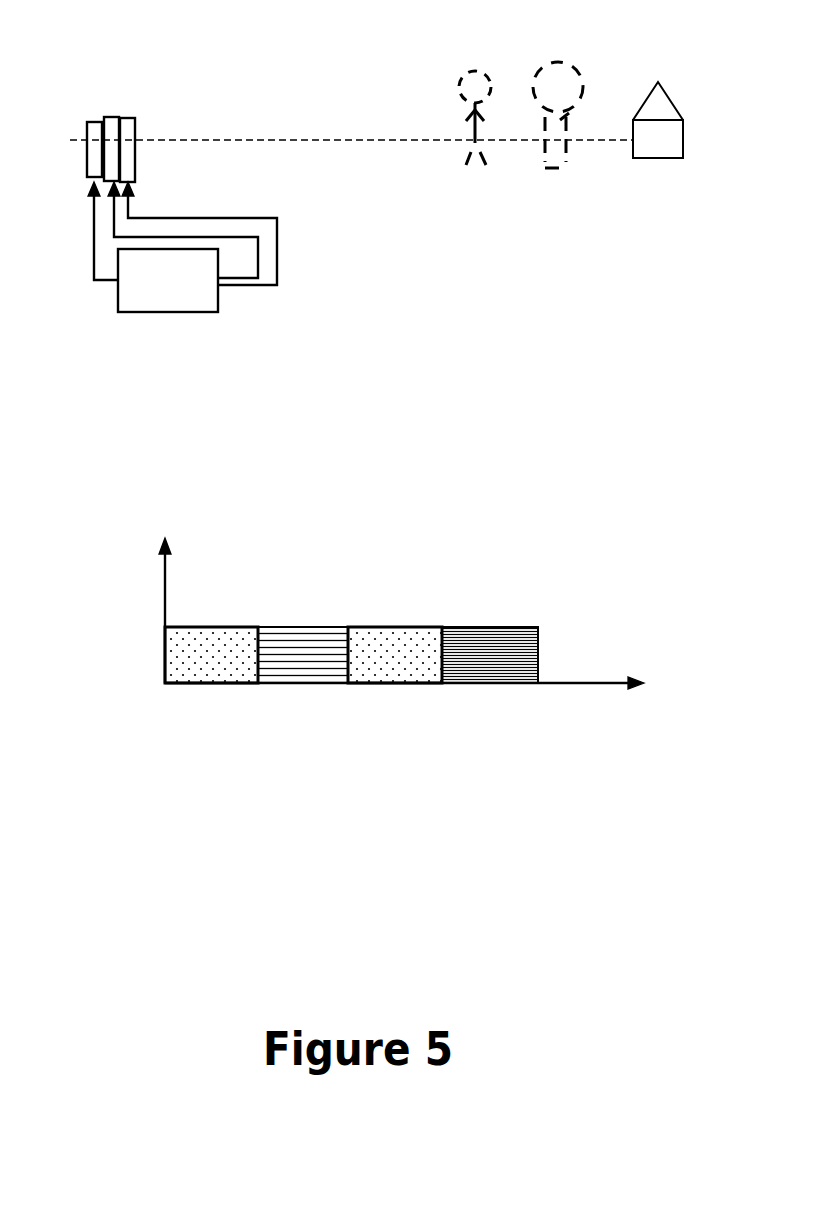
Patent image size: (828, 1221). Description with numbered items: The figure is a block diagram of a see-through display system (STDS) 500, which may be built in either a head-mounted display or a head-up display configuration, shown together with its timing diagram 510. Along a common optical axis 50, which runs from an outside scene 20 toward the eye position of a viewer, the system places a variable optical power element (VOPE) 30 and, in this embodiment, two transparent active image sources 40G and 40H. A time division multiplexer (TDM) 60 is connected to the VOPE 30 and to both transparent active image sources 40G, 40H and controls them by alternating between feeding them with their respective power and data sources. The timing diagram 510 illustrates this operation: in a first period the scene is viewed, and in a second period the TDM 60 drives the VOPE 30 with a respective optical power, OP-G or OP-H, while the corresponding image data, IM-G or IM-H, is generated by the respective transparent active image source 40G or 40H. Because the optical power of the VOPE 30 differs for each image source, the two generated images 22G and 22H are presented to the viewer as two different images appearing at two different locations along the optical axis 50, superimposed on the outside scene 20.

The outside scene 20 is at (638, 108).
The image G 22G is at (472, 107).
The image H 22H is at (530, 80).
The variable optical power element (VOPE) 30 is at (90, 122).
The transparent active image source G 40G is at (107, 117).
The transparent active image source H 40H is at (135, 132).
The optical axis 50 is at (360, 140).
The time division multiplexer (TDM) 60 is at (167, 313).
The see-through display system (STDS) 500 is at (455, 249).
The timing diagram 510 is at (344, 597).